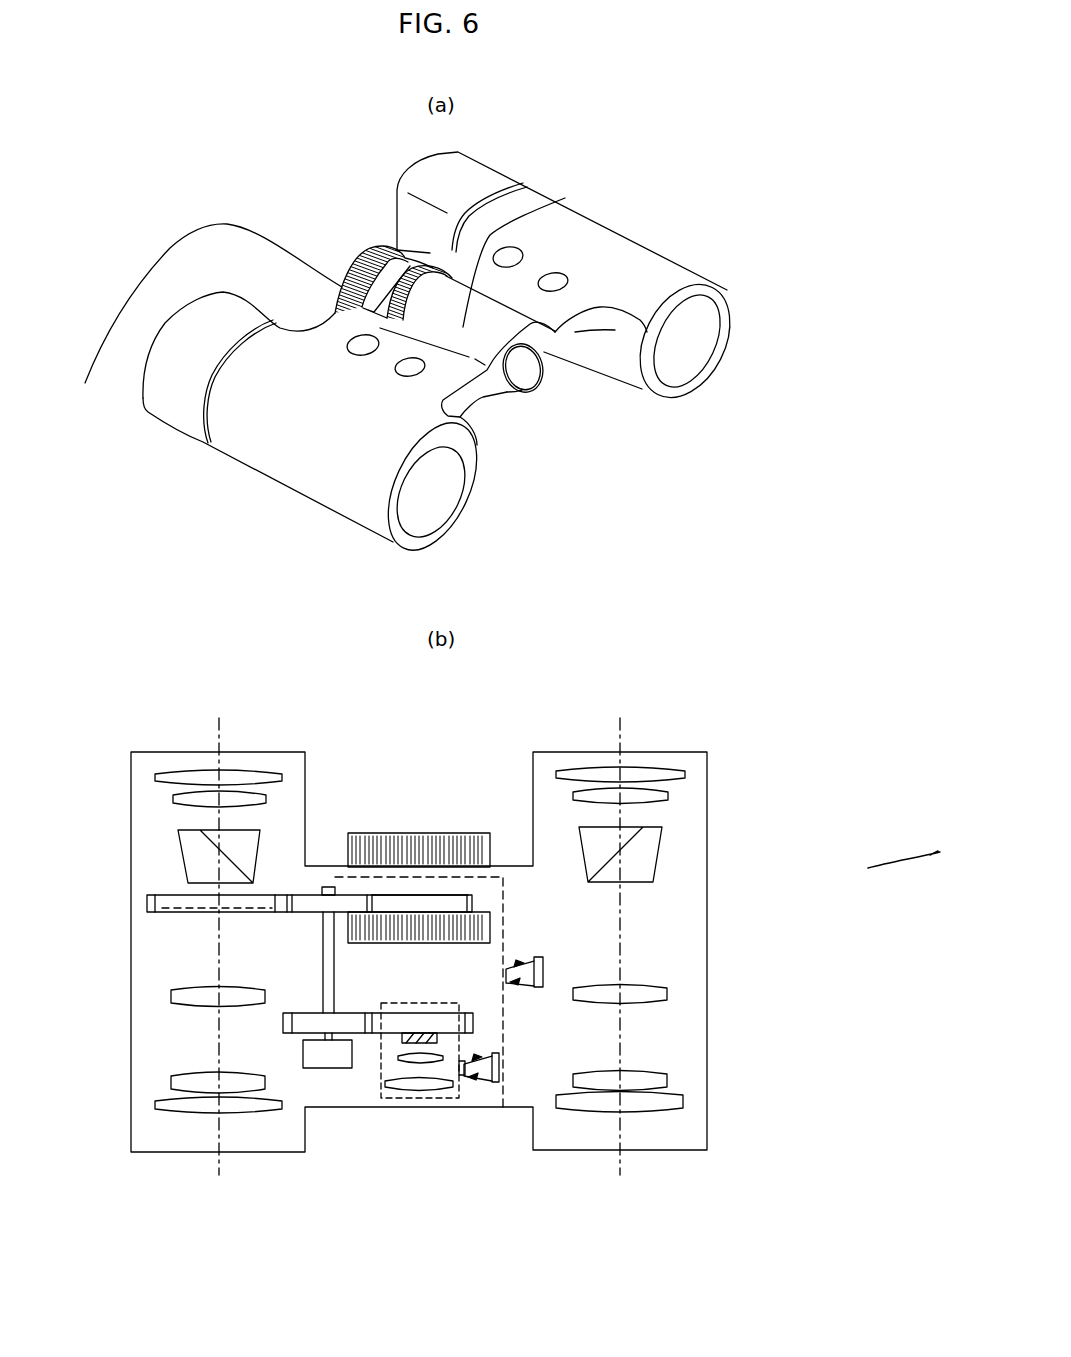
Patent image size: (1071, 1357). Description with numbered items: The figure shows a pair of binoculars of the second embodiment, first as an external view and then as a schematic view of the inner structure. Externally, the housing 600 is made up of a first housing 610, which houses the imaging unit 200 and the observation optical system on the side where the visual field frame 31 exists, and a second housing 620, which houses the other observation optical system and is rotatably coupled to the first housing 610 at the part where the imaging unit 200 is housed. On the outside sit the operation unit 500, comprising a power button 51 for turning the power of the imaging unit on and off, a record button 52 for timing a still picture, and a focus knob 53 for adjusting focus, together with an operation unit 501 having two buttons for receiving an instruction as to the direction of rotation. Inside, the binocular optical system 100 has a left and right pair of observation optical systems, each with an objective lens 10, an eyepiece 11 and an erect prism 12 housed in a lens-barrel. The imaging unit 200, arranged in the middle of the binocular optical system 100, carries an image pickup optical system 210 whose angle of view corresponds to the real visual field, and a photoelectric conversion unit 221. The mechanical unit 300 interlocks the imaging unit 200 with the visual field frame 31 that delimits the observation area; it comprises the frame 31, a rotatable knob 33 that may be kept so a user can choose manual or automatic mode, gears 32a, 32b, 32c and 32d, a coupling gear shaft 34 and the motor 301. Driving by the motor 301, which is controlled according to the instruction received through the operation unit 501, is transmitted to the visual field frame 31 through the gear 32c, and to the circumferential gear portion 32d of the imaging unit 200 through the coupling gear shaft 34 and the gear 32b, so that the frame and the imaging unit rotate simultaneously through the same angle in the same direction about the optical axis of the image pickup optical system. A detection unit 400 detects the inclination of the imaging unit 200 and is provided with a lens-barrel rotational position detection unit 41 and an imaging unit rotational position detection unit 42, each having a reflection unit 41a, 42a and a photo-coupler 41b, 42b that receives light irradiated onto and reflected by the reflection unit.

The objective lens 10 is at (700, 355).
The eyepiece 11 is at (158, 778).
The erect prism 12 is at (192, 845).
The binocular optical system 100 is at (85, 763).
The imaging unit 200 is at (520, 372).
The image pickup optical system 210 is at (405, 1068).
The photoelectric conversion unit (CCD) 221 is at (433, 1043).
The mechanical unit 300 is at (527, 772).
The motor 301 is at (337, 1055).
The visual field frame 31 is at (263, 900).
The gear 32a is at (322, 887).
The gear 32b is at (440, 905).
The gear 32c is at (350, 912).
The circumferential gear portion 32d is at (444, 1013).
The rotatable knob 33 is at (435, 272).
The coupling gear shaft 34 is at (346, 903).
The detection unit 400 is at (820, 1010).
The lens-barrel rotational position detection unit 41 is at (762, 883).
The reflection unit 41a is at (507, 965).
The photo-coupler 41b is at (540, 963).
The imaging unit rotational position detection unit 42 is at (762, 1010).
The reflection unit 42a is at (462, 1073).
The photo-coupler 42b is at (497, 1057).
The operation unit 500 is at (246, 524).
The operation unit 501 is at (508, 265).
The power button 51 is at (360, 343).
The record button 52 is at (407, 368).
The focus knob 53 is at (203, 319).
The housing 600 is at (700, 190).
The first housing 610 is at (463, 323).
The second housing 620 is at (596, 264).